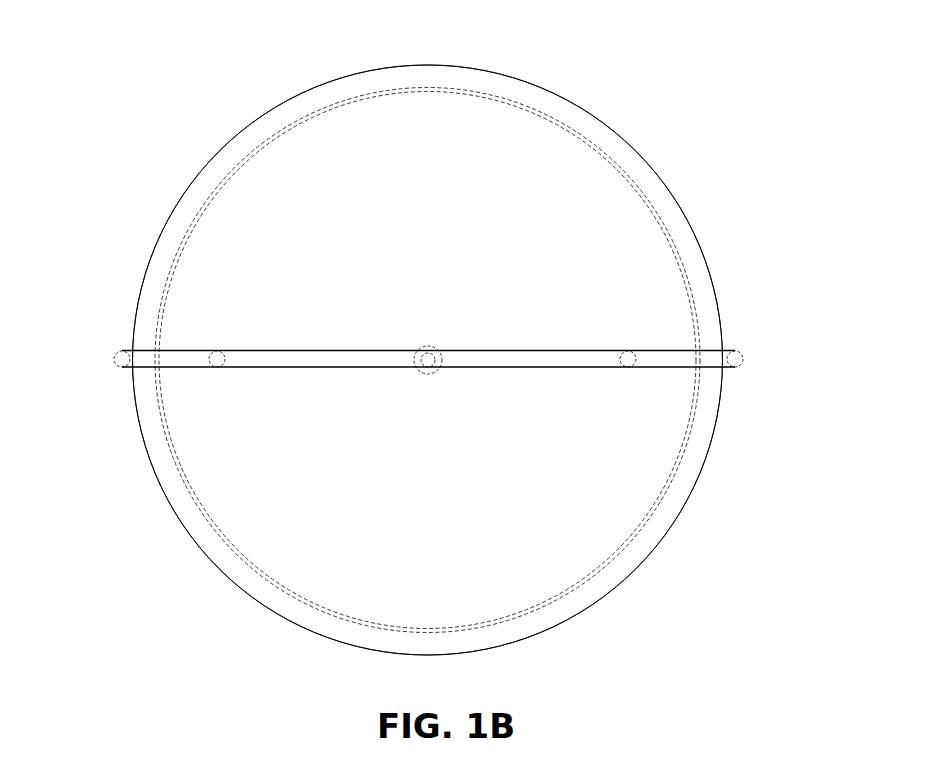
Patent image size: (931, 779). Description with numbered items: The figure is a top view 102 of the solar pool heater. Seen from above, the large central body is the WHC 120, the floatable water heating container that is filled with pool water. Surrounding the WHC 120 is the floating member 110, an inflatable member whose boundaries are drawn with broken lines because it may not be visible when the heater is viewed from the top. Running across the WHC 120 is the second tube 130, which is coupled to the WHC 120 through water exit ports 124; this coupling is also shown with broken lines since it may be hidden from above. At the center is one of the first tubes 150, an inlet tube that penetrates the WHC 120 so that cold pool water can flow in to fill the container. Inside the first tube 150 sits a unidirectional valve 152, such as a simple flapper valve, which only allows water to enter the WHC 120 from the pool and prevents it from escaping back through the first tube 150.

The top view 102 is at (443, 340).
The floating member 110 is at (480, 360).
The WHC 120 is at (390, 360).
The water exit ports 124 is at (422, 380).
The second tube 130 is at (428, 328).
The first tube 150 is at (484, 337).
The unidirectional valve 152 is at (382, 327).